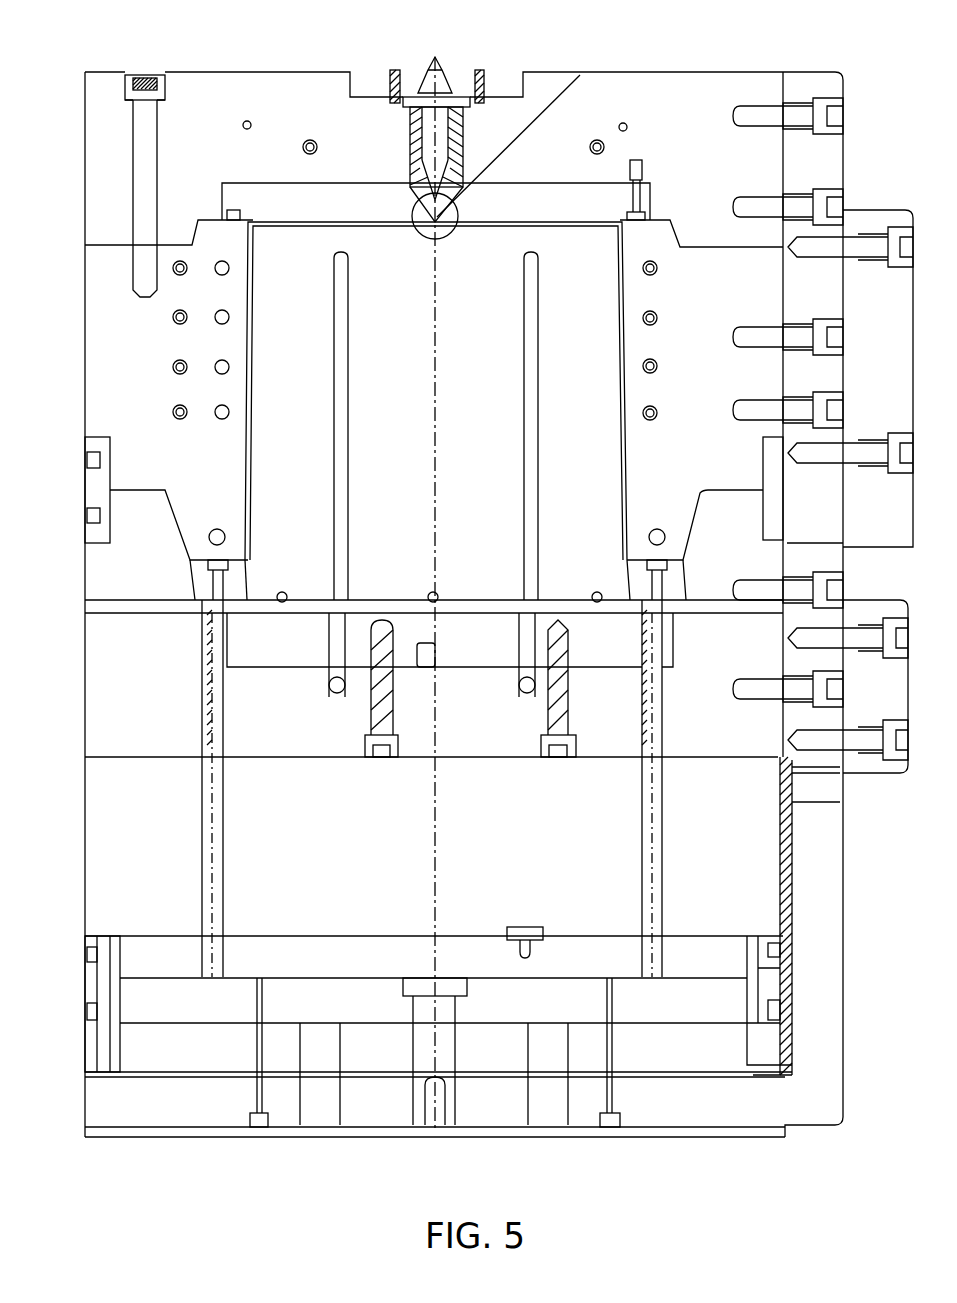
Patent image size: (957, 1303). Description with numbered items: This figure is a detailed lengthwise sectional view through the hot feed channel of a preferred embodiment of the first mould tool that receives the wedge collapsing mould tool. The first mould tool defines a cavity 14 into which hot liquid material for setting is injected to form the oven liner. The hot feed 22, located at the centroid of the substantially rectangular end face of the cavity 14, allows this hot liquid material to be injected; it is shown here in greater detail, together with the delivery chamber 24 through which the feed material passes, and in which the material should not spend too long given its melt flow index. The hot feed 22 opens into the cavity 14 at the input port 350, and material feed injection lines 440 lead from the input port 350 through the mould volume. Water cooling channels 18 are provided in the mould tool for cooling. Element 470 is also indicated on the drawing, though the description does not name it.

The cavity 14 is at (287, 217).
The water cooling channels 18 is at (172, 268).
The hot feed 22 is at (432, 62).
The delivery chamber 24 is at (418, 133).
The input port 350 is at (437, 229).
The material feed injection lines 440 is at (253, 440).
The cavity plate 470 is at (523, 213).